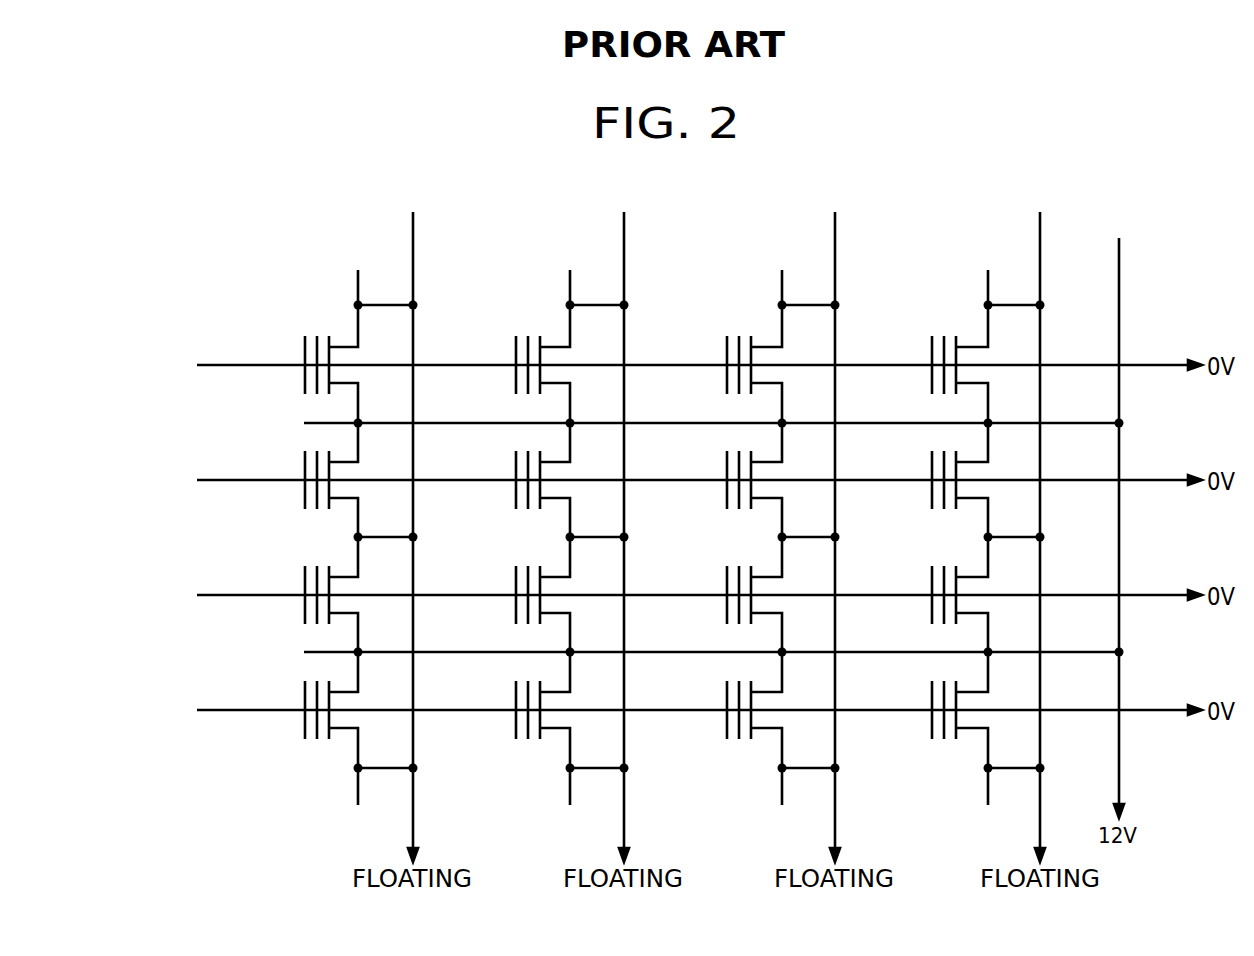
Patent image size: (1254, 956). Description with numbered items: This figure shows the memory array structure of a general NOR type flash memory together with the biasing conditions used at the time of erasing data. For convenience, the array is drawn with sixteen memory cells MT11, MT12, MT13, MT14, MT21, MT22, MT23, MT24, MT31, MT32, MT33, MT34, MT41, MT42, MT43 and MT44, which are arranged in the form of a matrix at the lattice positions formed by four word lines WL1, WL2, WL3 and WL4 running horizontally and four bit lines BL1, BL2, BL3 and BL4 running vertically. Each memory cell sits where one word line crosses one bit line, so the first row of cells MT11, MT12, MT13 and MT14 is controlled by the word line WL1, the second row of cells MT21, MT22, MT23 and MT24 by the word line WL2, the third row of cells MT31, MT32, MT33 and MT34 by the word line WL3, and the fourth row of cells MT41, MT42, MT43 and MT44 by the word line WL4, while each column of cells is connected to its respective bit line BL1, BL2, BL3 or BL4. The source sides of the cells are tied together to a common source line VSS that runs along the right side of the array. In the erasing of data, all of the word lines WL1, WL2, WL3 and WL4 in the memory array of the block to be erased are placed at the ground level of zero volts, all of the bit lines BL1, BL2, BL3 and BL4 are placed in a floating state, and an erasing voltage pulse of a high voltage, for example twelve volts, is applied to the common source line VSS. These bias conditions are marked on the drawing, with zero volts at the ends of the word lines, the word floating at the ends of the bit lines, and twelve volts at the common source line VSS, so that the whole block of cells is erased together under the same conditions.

The memory cell MT11 is at (297, 364).
The memory cell MT12 is at (509, 364).
The memory cell MT13 is at (720, 364).
The memory cell MT14 is at (926, 364).
The memory cell MT21 is at (297, 480).
The memory cell MT22 is at (509, 480).
The memory cell MT23 is at (720, 480).
The memory cell MT24 is at (926, 480).
The memory cell MT31 is at (297, 594).
The memory cell MT32 is at (509, 594).
The memory cell MT33 is at (720, 594).
The memory cell MT34 is at (926, 594).
The memory cell MT41 is at (297, 710).
The memory cell MT42 is at (509, 710).
The memory cell MT43 is at (720, 710).
The memory cell MT44 is at (926, 710).
The word line WL1 is at (672, 365).
The word line WL2 is at (672, 480).
The word line WL3 is at (672, 595).
The word line WL4 is at (672, 710).
The bit line BL1 is at (413, 522).
The bit line BL2 is at (624, 522).
The bit line BL3 is at (835, 522).
The bit line BL4 is at (1040, 522).
The common source line VSS is at (1119, 514).